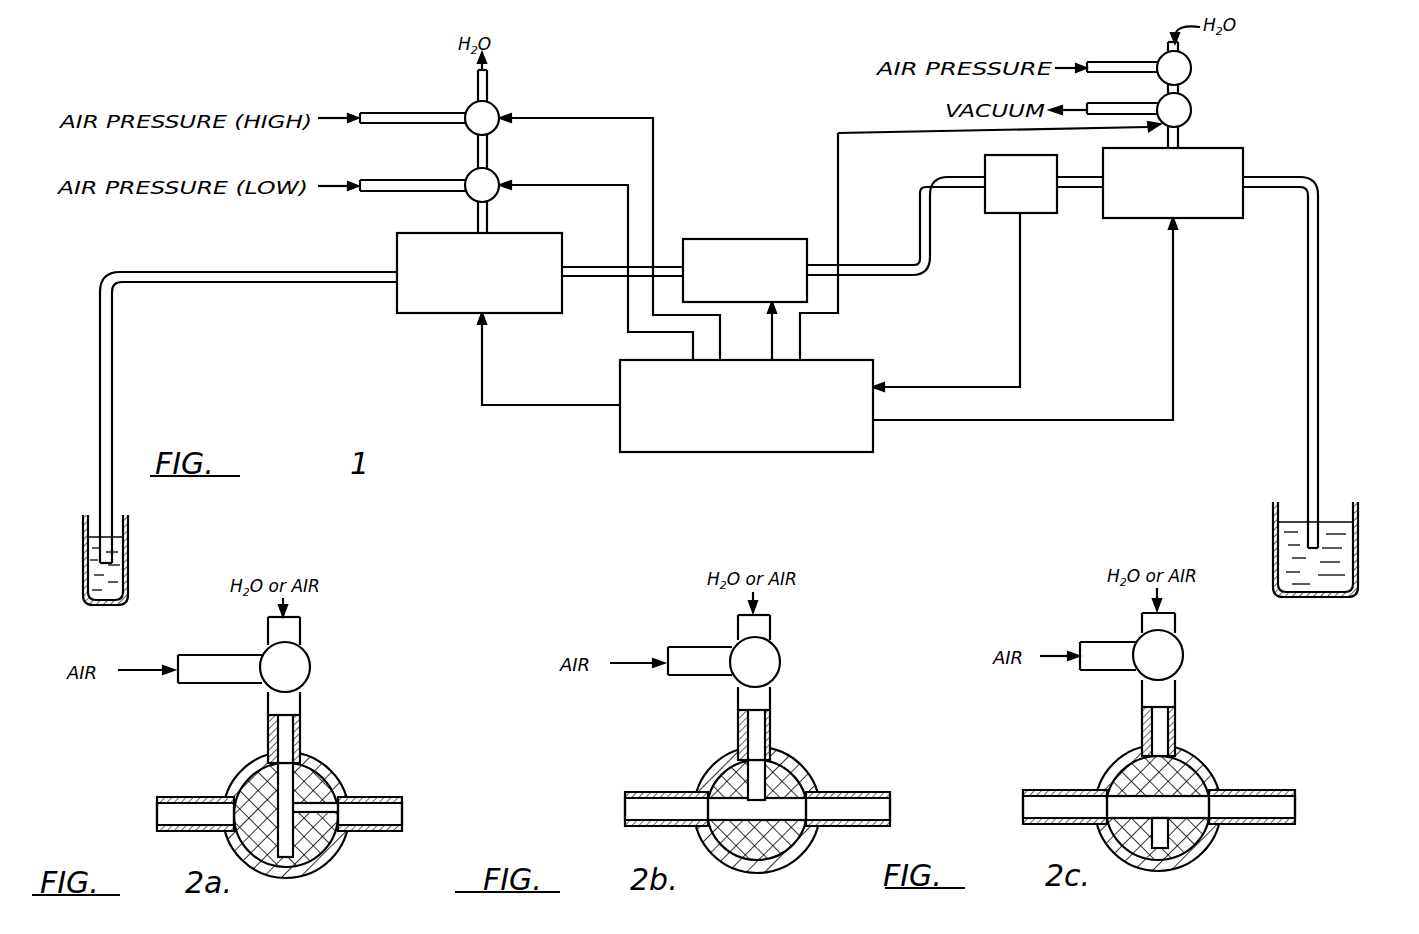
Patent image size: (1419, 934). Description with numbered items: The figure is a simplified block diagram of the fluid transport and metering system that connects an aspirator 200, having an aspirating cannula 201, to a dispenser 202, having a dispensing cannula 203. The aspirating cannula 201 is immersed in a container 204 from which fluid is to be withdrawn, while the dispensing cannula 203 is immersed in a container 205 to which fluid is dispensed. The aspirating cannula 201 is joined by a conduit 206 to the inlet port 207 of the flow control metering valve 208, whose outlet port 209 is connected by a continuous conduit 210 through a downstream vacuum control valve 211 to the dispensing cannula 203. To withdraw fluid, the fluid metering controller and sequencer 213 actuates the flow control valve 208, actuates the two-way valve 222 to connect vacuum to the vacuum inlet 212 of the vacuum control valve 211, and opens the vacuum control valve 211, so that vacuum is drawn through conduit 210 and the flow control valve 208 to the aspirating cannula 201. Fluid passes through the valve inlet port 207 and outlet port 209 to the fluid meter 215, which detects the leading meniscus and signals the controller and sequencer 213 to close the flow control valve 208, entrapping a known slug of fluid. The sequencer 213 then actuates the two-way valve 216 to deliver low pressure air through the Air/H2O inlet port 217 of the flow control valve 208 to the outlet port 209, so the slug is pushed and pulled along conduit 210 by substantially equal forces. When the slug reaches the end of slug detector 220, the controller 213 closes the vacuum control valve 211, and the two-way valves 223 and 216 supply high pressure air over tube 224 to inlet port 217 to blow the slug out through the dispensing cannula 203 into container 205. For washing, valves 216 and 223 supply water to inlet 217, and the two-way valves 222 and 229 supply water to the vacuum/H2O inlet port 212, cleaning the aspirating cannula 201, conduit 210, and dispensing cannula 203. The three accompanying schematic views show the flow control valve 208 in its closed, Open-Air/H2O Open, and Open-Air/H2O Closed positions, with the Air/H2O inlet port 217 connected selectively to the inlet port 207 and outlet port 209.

In FIG. 1, the aspirator 200 is at (221, 256).
In FIG. 1, the aspirating cannula 201 is at (112, 390).
In FIG. 1, the dispenser 202 is at (1259, 144).
In FIG. 1, the dispensing cannula 203 is at (1308, 428).
In FIG. 1, the container 204 is at (128, 546).
In FIG. 1, the container 205 is at (1273, 535).
In FIG. 1, the conduit 206 is at (240, 283).
In FIG. 1, the inlet port 207 is at (380, 272).
In FIG. 2A, the inlet port 207 is at (205, 798).
In FIG. 2B, the inlet port 207 is at (670, 792).
In FIG. 2C, the inlet port 207 is at (1072, 790).
In FIG. 1, the flow control metering valve 208 is at (440, 314).
In FIG. 2A, the flow control metering valve 208 is at (320, 772).
In FIG. 2B, the flow control metering valve 208 is at (790, 765).
In FIG. 2C, the flow control metering valve 208 is at (1185, 756).
In FIG. 1, the outlet port 209 is at (620, 279).
In FIG. 2A, the outlet port 209 is at (385, 797).
In FIG. 2B, the outlet port 209 is at (870, 792).
In FIG. 2C, the outlet port 209 is at (1258, 790).
In FIG. 1, the conduit 210 is at (932, 243).
In FIG. 1, the vacuum control valve 211 is at (1153, 219).
In FIG. 1, the vacuum inlet 212 is at (1180, 139).
In FIG. 1, the fluid metering controller and sequencer 213 is at (873, 362).
In FIG. 1, the fluid meter 215 is at (738, 239).
In FIG. 1, the two-way valve 216 is at (495, 197).
In FIG. 2A, the two-way valve 216 is at (310, 668).
In FIG. 2B, the two-way valve 216 is at (780, 665).
In FIG. 2C, the two-way valve 216 is at (1183, 660).
In FIG. 1, the Air/H2O inlet port 217 is at (478, 219).
In FIG. 2A, the Air/H2O inlet port 217 is at (268, 733).
In FIG. 2B, the Air/H2O inlet port 217 is at (738, 725).
In FIG. 2C, the Air/H2O inlet port 217 is at (1150, 699).
In FIG. 1, the end of slug detector 220 is at (1028, 213).
In FIG. 1, the two-way valve 222 is at (1191, 110).
In FIG. 1, the two-way valve 223 is at (496, 108).
In FIG. 1, the tube 224 is at (489, 152).
In FIG. 1, the two-way control valve 229 is at (1191, 68).